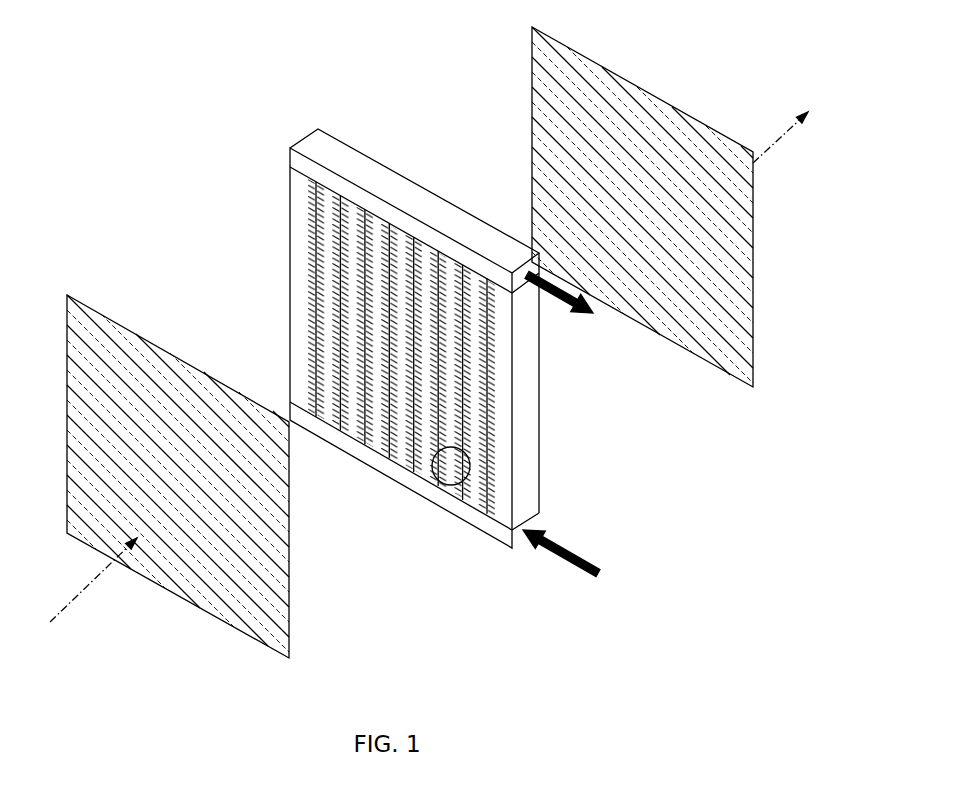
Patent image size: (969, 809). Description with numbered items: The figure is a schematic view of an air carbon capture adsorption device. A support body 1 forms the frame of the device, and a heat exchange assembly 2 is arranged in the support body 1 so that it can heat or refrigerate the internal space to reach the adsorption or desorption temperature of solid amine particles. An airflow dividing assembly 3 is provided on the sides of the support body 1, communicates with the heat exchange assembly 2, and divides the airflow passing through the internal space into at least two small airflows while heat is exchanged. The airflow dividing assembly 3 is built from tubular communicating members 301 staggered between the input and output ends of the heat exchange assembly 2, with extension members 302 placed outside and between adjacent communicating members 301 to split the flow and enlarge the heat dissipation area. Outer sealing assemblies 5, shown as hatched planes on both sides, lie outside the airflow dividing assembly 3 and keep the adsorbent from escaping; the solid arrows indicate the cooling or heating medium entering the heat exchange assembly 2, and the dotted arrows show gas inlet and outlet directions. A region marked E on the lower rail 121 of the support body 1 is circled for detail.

The support body 1 is at (290, 195).
The heat exchange assembly 2 is at (318, 146).
The airflow dividing assembly 3 is at (362, 347).
The communicating member 301 is at (318, 258).
The extension member 302 is at (318, 288).
The bottom plate 121 is at (309, 415).
The outer sealing assembly 5 is at (73, 378).
The detail region E is at (453, 485).